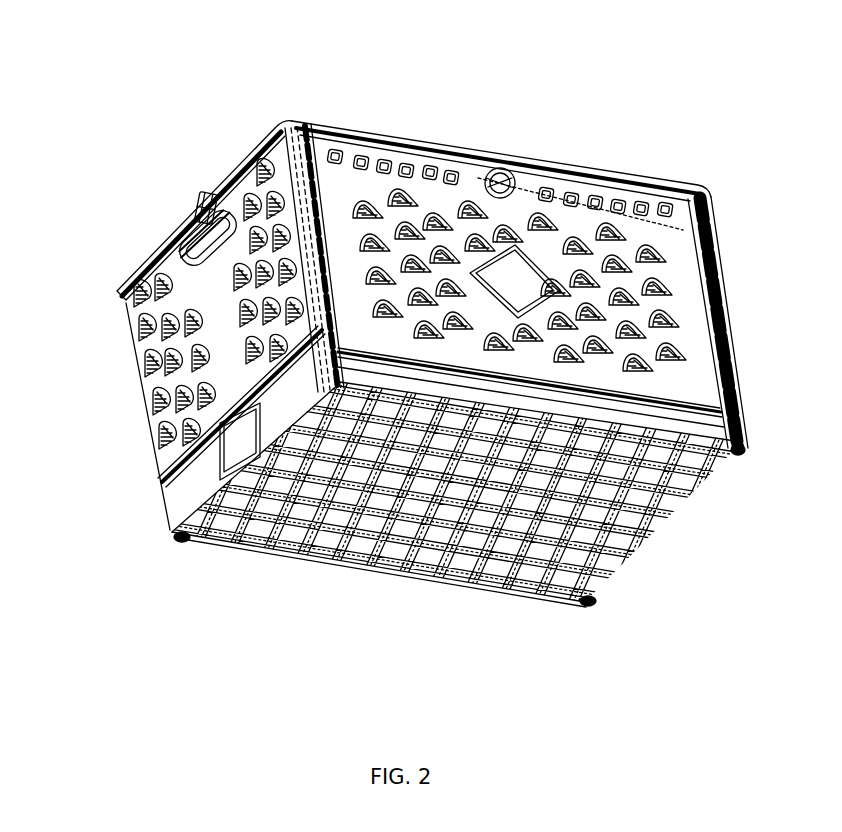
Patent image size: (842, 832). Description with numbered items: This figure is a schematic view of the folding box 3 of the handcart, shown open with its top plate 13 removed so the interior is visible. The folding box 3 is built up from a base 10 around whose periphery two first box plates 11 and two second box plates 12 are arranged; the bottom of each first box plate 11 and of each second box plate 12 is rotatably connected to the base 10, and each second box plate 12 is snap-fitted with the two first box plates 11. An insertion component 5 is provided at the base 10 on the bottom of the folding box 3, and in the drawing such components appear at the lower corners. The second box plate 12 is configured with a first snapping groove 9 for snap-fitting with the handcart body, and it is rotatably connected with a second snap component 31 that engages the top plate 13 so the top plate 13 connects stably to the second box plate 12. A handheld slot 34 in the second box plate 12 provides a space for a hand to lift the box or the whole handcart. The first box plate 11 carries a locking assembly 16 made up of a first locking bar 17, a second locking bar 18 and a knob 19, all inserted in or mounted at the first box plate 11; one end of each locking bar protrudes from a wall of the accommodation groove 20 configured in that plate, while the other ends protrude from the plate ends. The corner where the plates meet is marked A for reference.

The folding box 3 is at (108, 222).
The insertion component 5 is at (183, 541).
The first snapping groove 9 is at (240, 546).
The base 10 is at (160, 500).
The first box plate 11 is at (677, 250).
The second box plate 12 is at (131, 308).
The top plate 13 is at (377, 130).
The locking assembly 16 is at (607, 80).
The first locking bar 17 is at (455, 150).
The second locking bar 18 is at (551, 172).
The knob 19 is at (506, 166).
The accommodation groove 20 is at (683, 230).
The second snap component 31 is at (187, 214).
The handheld slot 34 is at (210, 192).
The detail region A is at (299, 125).